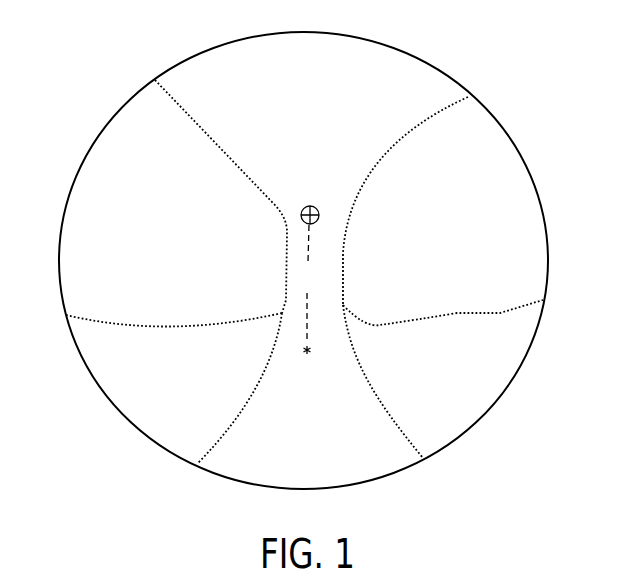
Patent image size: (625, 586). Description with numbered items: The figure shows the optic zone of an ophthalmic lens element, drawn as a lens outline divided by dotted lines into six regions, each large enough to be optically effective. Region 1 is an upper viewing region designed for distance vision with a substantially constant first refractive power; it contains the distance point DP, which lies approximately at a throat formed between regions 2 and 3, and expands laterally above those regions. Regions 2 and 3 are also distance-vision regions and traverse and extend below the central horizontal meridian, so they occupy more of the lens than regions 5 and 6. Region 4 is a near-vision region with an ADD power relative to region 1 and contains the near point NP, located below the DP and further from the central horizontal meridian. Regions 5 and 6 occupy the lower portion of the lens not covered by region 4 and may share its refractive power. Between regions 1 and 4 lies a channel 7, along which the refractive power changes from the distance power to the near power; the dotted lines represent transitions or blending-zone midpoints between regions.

The region 1 (upper viewing region) 1 is at (310, 202).
The region 2 is at (176, 203).
The region 3 is at (443, 211).
The region 4 is at (308, 384).
The region 5 is at (216, 388).
The region 6 is at (400, 381).
The channel 7 is at (307, 303).